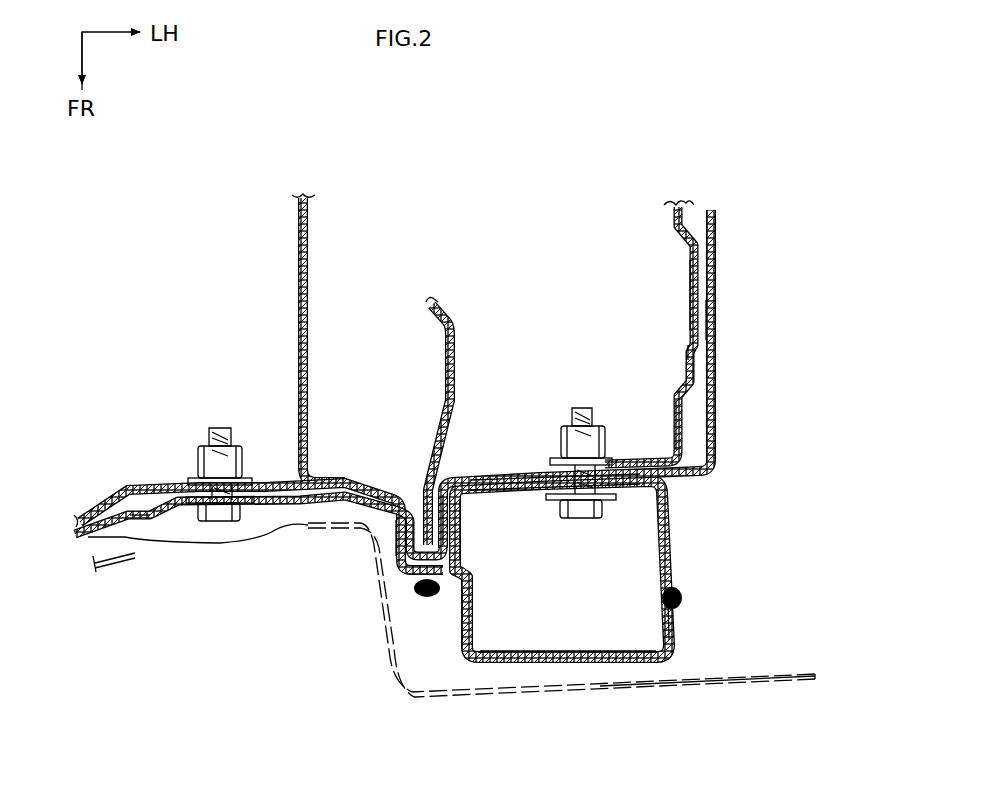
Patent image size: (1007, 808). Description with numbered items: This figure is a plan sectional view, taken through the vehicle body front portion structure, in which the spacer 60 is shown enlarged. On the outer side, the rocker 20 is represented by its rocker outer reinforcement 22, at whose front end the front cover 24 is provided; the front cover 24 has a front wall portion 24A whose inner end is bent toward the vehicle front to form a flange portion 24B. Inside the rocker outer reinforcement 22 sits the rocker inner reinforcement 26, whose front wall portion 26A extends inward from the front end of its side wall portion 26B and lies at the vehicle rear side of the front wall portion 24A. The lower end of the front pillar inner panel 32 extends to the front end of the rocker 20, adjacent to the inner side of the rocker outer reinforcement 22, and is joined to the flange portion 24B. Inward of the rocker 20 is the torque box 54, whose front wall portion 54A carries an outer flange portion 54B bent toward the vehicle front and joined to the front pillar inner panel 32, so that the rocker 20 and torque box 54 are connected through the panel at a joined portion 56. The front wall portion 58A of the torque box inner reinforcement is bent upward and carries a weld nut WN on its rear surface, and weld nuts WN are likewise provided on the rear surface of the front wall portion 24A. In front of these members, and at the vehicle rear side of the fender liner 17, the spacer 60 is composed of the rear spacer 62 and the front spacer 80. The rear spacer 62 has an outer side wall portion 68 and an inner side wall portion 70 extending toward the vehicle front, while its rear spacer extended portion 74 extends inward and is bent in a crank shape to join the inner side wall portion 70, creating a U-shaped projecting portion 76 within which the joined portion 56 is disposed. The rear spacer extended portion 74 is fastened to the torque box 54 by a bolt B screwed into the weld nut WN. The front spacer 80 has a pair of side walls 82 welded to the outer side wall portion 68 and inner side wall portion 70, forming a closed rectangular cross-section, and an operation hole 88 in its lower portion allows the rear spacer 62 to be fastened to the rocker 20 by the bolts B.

The fender liner 17 is at (680, 688).
The rocker 20 is at (722, 318).
The rocker outer reinforcement 22 is at (658, 309).
The front cover 24 is at (610, 379).
The front wall portion 24A is at (483, 482).
The flange portion 24B is at (451, 468).
The rocker inner reinforcement 26 is at (675, 232).
The front wall portion 26A is at (618, 462).
The side wall portion 26B is at (688, 292).
The front pillar inner panel 32 is at (455, 348).
The torque box 54 is at (259, 528).
The front wall portion 54A is at (140, 527).
The flange portion 54B is at (413, 517).
The joined portion 56 is at (420, 600).
The front wall portion 58A is at (148, 486).
The spacer 60 is at (424, 672).
The rear spacer 62 is at (586, 574).
The outer side wall portion 68 is at (528, 496).
The inner side wall portion 70 is at (468, 545).
The rear spacer extended portion 74 is at (296, 524).
The projecting portion 76 is at (392, 556).
The front spacer 80 is at (684, 648).
The side walls 82 is at (460, 618).
The operation hole 88 is at (529, 660).
The weld nut WN is at (200, 452).
The bolt B is at (225, 522).